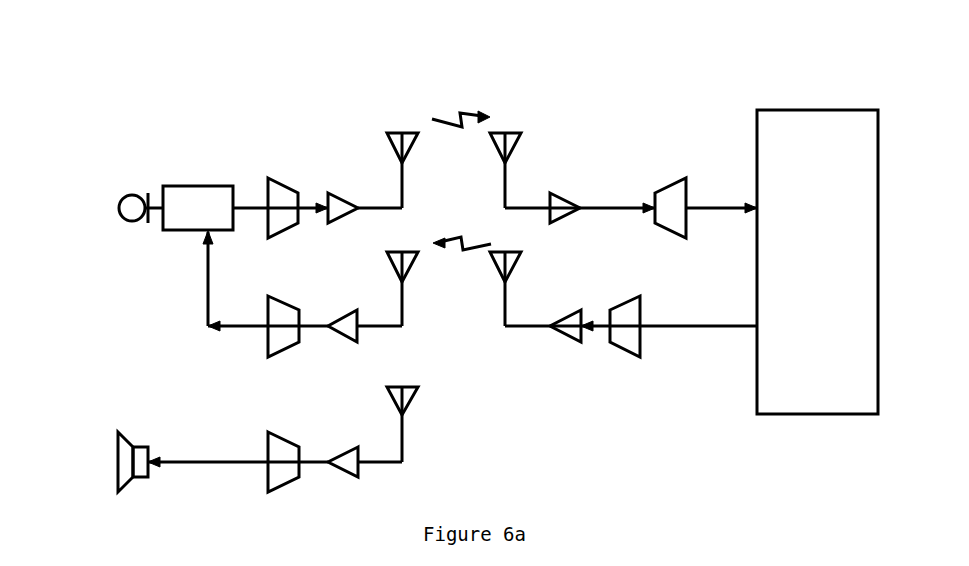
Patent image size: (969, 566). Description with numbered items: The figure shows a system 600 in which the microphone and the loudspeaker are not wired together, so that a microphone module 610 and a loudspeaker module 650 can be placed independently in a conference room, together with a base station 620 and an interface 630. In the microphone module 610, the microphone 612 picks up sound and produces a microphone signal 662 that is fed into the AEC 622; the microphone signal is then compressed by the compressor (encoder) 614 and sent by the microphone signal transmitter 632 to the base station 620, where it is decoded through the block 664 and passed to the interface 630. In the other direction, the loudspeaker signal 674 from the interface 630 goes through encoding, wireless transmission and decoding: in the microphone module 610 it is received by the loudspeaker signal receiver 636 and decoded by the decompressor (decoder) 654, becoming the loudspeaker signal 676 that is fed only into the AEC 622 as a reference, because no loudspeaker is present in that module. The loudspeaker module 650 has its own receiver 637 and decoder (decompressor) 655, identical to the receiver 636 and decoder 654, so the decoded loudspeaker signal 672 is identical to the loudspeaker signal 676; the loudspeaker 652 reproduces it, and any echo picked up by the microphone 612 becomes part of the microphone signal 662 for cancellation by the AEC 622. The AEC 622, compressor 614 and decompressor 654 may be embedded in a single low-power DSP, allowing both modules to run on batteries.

The system 600 is at (305, 45).
The microphone module 610 is at (165, 112).
The microphone 612 is at (128, 196).
The microphone signal 662 is at (152, 216).
The AEC 622 is at (200, 186).
The compressor (encoder) 614 is at (298, 195).
The microphone signal transmitter 632 is at (399, 132).
The loudspeaker signal receiver 636 is at (417, 252).
The decompressor (decoder) 654 is at (300, 310).
The loudspeaker signal 676 is at (207, 298).
The base station 620 is at (627, 92).
The base receiver demodulator 664 is at (738, 205).
The loudspeaker signal 674 is at (735, 325).
The interface 630 is at (843, 110).
The loudspeaker module 650 is at (139, 386).
The loudspeaker 652 is at (118, 447).
The decoded loudspeaker signal 672 is at (228, 460).
The decoder (decompressor) 655 is at (284, 432).
The receiver 637 is at (405, 388).